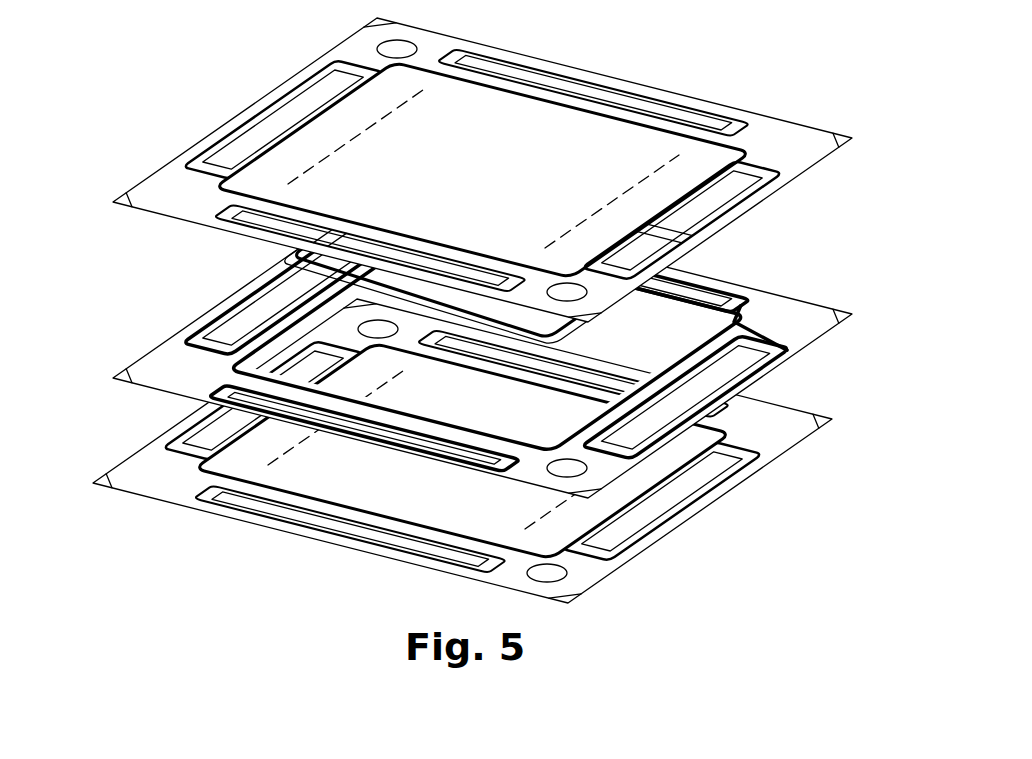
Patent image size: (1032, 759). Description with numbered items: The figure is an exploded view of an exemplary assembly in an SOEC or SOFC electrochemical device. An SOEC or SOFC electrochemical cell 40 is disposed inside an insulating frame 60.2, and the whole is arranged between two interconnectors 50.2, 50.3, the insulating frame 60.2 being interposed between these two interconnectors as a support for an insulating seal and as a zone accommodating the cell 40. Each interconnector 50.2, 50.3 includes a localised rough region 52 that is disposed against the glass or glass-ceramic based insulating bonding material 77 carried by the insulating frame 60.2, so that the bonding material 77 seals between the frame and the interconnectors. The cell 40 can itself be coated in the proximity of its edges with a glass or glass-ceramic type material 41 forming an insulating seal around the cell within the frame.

The interconnector 50.2 is at (792, 122).
The interconnector 50.3 is at (797, 420).
The rough region 52 is at (752, 201).
The insulating frame 60.2 is at (443, 346).
The insulating bonding material 77 is at (210, 315).
The electrochemical cell 40 is at (284, 262).
The glass or glass-ceramic type material 41 is at (545, 334).